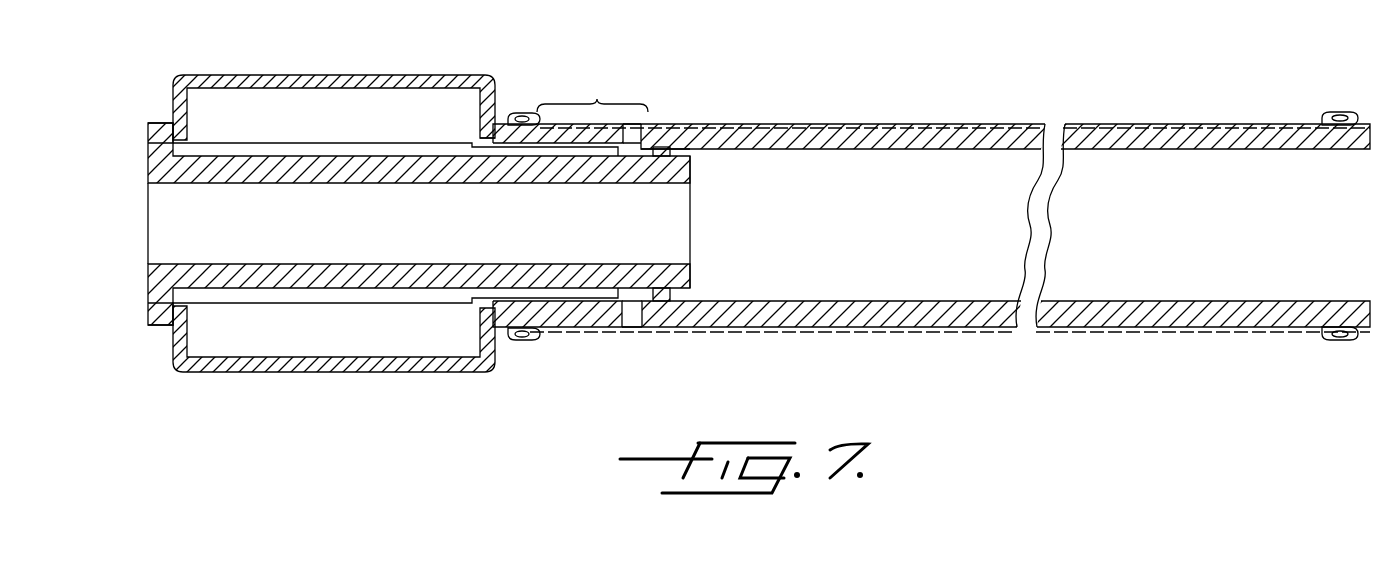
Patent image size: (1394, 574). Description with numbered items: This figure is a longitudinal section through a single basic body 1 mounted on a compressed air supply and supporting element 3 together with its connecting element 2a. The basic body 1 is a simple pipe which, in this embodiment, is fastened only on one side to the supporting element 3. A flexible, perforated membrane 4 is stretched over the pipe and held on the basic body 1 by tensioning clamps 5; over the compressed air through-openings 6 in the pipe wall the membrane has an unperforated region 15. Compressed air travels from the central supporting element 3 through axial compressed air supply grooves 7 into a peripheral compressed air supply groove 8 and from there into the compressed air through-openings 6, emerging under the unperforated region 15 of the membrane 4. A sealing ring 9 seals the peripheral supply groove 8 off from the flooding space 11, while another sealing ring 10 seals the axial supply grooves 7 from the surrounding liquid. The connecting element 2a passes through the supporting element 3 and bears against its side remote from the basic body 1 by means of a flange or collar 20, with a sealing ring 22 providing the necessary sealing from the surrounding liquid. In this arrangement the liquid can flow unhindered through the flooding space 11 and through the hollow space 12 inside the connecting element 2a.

The basic body 1 is at (922, 328).
The connecting element 2a is at (690, 276).
The compressed air supply and supporting element 3 is at (312, 75).
The flexible, perforated membrane 4 is at (890, 124).
The tensioning clamps 5 is at (1340, 112).
The compressed air outlet openings 6 is at (634, 123).
The axial compressed air supply grooves 7 is at (375, 150).
The peripheral compressed air supply groove 8 is at (658, 148).
The sealing ring 9 is at (666, 305).
The sealing ring 10 is at (493, 137).
The flooding space 11 is at (946, 230).
The hollow space 12 is at (554, 237).
The unperforated region 15 is at (593, 98).
The flange or collar 20 is at (155, 123).
The sealing ring 22 is at (157, 312).